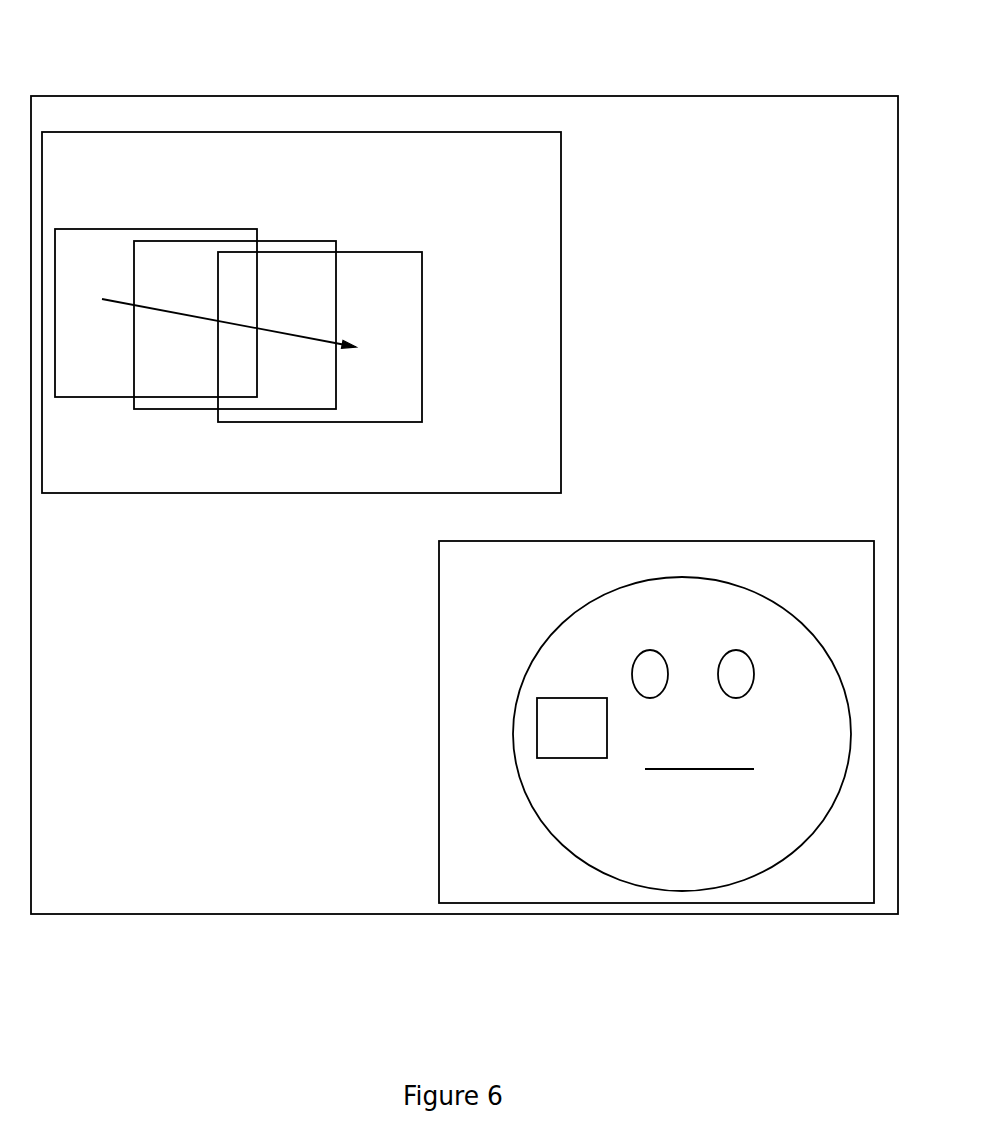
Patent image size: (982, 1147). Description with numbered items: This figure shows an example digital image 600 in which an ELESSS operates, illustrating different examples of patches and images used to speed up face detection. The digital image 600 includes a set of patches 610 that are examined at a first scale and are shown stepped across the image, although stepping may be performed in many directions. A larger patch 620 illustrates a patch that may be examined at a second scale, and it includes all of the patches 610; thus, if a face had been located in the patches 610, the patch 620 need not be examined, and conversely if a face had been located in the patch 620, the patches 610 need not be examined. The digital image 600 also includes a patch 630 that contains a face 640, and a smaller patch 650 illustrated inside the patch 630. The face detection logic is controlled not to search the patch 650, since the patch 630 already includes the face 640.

The digital image 600 is at (463, 95).
The set of patches 610 is at (320, 250).
The patch 620 is at (302, 130).
The patch 630 is at (657, 540).
The face 640 is at (790, 614).
The patch 650 is at (578, 734).